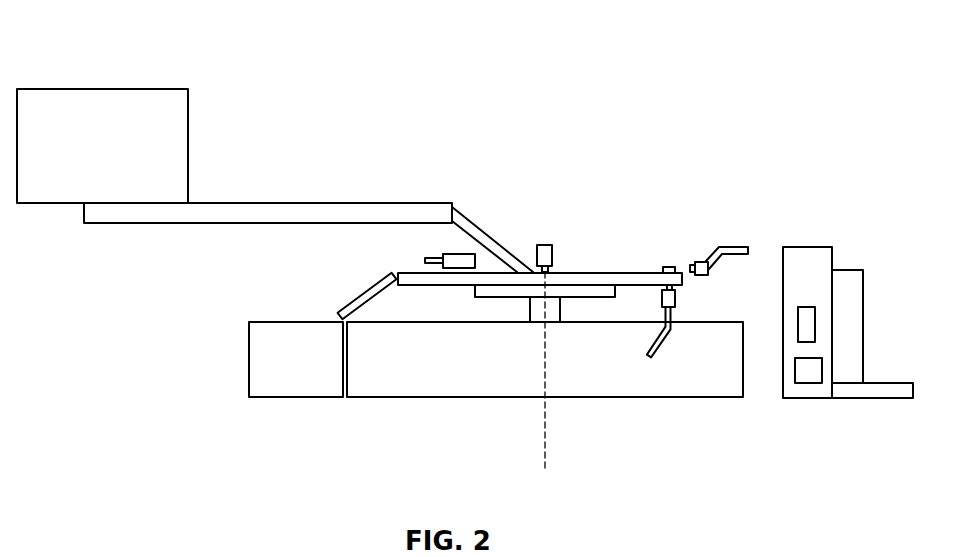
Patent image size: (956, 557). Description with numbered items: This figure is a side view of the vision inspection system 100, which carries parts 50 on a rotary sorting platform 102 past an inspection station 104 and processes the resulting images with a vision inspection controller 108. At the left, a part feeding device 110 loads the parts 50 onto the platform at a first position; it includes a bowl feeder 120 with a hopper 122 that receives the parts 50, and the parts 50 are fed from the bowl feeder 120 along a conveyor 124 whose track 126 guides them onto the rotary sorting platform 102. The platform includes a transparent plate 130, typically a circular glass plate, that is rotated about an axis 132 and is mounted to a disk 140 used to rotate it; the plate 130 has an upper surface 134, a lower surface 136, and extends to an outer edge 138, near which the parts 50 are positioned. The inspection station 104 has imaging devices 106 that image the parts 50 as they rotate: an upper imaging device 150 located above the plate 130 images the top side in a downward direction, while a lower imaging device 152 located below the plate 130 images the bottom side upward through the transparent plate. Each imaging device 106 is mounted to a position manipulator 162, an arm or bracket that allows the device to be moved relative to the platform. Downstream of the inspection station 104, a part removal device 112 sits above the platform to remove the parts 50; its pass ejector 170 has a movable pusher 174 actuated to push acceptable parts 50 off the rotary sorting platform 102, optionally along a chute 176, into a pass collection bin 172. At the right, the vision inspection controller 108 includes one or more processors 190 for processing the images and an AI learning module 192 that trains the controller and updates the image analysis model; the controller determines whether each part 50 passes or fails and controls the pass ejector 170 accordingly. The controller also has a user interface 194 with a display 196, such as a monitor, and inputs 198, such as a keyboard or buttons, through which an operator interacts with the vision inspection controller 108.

The vision inspection system 100 is at (588, 117).
The part feeding device 110 is at (288, 160).
The hopper 122 is at (91, 86).
The bowl feeder 120 is at (182, 122).
The conveyor 124 is at (341, 212).
The track 126 is at (488, 242).
The part removal device 112 is at (458, 251).
The movable pusher 174 is at (426, 259).
The upper imaging device 150 is at (545, 245).
The axis 132 is at (542, 442).
The upper surface 134 is at (408, 273).
The disk 140 is at (490, 297).
The transparent plate 130 is at (423, 281).
The pass ejector 170 is at (456, 268).
The chute 176 is at (367, 295).
The pass collection bin 172 is at (250, 338).
The lower surface 136 is at (410, 286).
The rotary sorting platform 102 is at (631, 284).
The part 50 is at (668, 267).
The lower imaging device 152 is at (675, 301).
The outer edge 138 is at (684, 282).
The position manipulator 162 is at (728, 248).
The imaging device 106 is at (706, 278).
The inspection station 104 is at (714, 224).
The vision inspection controller 108 is at (843, 216).
The user interface 194 is at (851, 266).
The inputs 198 is at (888, 398).
The processors 190 is at (808, 325).
The display 196 is at (850, 322).
The AI learning module 192 is at (808, 370).